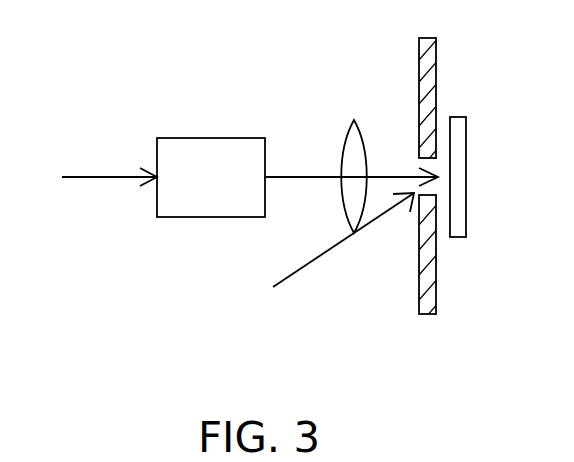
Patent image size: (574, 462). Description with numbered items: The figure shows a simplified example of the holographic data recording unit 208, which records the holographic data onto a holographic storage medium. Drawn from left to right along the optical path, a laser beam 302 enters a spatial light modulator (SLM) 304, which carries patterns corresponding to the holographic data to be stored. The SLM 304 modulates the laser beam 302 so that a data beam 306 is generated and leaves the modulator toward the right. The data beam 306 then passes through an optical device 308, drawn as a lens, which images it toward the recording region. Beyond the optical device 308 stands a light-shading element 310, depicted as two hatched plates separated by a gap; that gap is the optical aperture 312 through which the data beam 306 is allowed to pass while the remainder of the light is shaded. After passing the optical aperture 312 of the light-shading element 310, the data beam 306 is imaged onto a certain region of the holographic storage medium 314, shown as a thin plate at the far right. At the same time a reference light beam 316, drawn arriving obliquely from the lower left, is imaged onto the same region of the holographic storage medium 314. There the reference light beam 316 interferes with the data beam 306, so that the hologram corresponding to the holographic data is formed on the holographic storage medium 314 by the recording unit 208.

The holographic data recording unit 208 is at (194, 260).
The laser beam 302 is at (112, 175).
The spatial light modulator (SLM) 304 is at (213, 137).
The data beam 306 is at (302, 175).
The optical device 308 is at (355, 120).
The light-shading element 310 is at (430, 317).
The optical aperture 312 is at (410, 153).
The holographic storage medium 314 is at (460, 117).
The reference light beam 316 is at (322, 258).